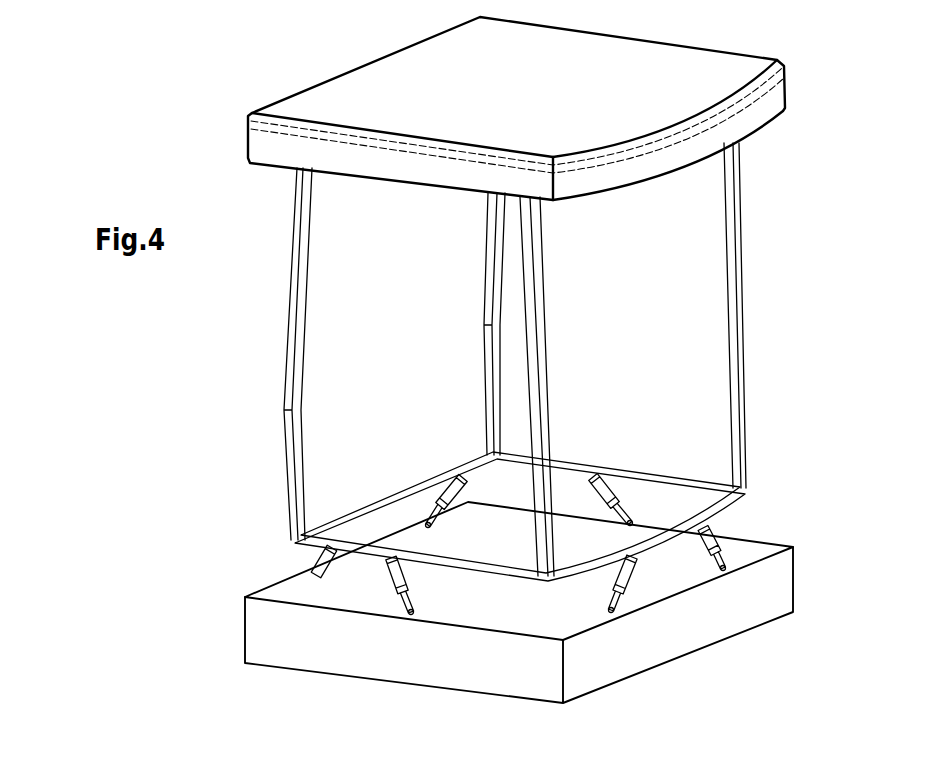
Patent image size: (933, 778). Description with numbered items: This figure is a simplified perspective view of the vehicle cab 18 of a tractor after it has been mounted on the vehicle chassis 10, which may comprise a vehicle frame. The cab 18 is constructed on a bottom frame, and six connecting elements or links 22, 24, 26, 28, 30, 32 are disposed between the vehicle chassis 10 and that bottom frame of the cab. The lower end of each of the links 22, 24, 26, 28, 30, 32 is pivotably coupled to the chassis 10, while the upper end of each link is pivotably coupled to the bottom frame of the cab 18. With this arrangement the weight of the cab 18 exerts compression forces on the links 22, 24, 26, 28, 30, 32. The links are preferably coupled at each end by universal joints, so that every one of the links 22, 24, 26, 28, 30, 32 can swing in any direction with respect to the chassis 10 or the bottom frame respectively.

The vehicle chassis 10 is at (688, 635).
The vehicle cab 18 is at (653, 250).
The connecting element 22 is at (725, 568).
The connecting element 24 is at (610, 490).
The connecting element 26 is at (435, 497).
The connecting element 28 is at (617, 600).
The connecting element 30 is at (397, 597).
The connecting element 32 is at (317, 561).